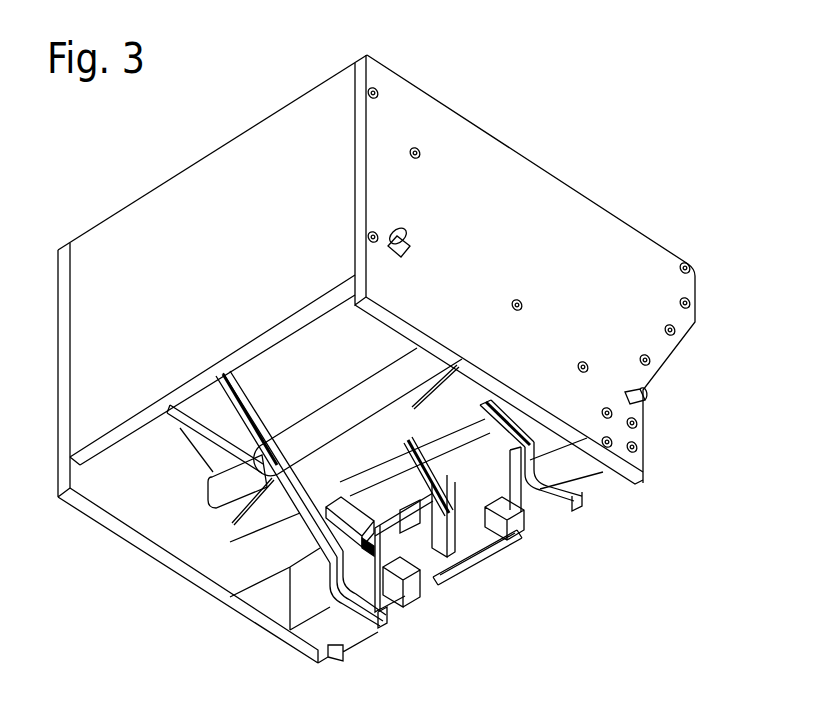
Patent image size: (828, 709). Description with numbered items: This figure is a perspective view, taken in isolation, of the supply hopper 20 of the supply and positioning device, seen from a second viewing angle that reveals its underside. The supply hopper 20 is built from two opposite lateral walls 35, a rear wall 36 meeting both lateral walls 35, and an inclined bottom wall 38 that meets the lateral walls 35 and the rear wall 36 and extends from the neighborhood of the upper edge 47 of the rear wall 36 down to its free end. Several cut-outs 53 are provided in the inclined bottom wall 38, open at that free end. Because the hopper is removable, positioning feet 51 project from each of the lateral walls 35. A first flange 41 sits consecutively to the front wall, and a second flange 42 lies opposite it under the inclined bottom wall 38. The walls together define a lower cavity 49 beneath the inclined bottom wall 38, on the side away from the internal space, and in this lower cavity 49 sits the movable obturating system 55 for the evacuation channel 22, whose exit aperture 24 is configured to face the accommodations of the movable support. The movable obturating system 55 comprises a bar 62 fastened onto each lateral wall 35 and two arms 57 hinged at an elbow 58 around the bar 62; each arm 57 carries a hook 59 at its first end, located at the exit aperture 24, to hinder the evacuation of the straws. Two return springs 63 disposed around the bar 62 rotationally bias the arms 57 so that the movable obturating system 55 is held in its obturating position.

The supply hopper 20 is at (578, 99).
The upper edge 47 is at (245, 131).
The rear wall 36 is at (235, 252).
The lateral walls 35 is at (536, 237).
The inclined bottom wall 38 is at (321, 371).
The positioning feet 51 is at (402, 236).
The bar 62 is at (376, 385).
The arms 57 is at (200, 411).
The elbow 58 is at (250, 446).
The return springs 63 is at (434, 377).
The lower cavity 49 is at (238, 572).
The movable obturating system 55 is at (284, 556).
The cut-outs 53 is at (357, 506).
The second flange 42 is at (423, 573).
The evacuation channel 22 is at (450, 573).
The exit aperture 24 is at (497, 552).
The first flange 41 is at (511, 539).
The hook 59 is at (383, 626).